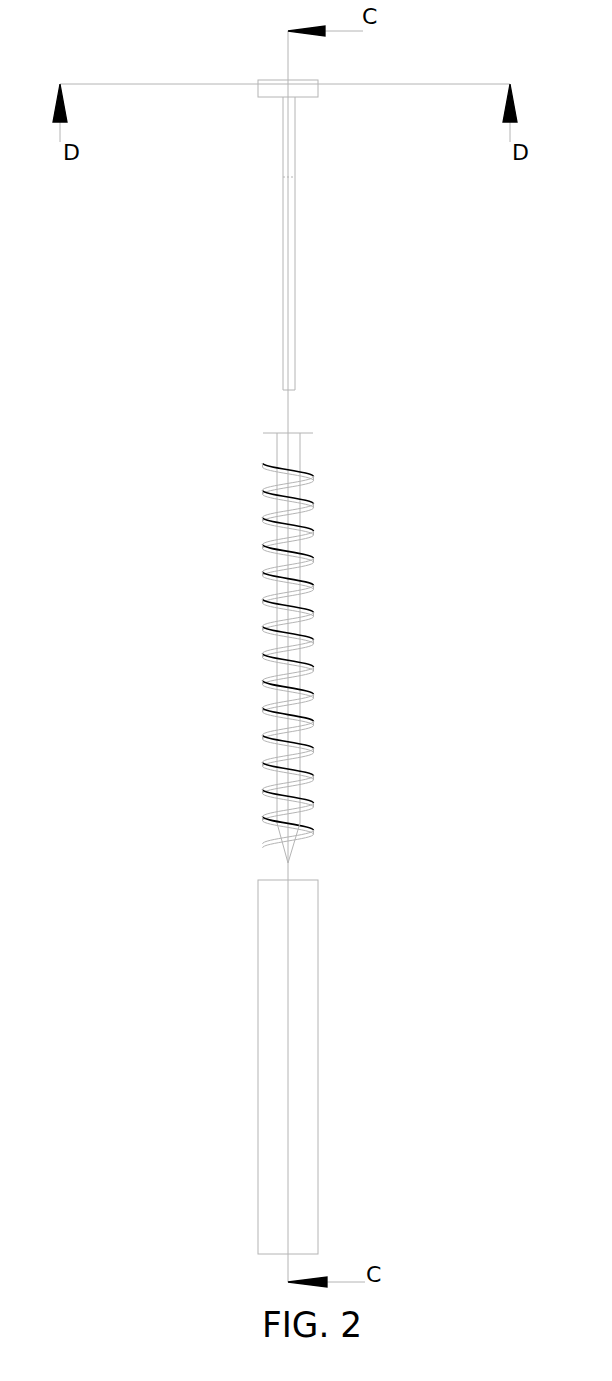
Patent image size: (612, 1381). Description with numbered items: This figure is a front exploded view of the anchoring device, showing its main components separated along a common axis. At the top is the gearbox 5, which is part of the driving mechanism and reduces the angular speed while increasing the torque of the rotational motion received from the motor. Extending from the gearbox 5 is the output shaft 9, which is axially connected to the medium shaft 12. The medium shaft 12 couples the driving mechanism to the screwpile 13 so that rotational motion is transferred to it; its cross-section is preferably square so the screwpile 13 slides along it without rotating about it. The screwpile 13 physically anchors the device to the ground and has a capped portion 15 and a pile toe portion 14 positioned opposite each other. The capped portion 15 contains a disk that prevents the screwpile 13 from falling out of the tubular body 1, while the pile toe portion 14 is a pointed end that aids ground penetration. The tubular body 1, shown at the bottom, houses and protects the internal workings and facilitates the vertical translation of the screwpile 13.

The tubular body 1 is at (312, 1063).
The gearbox 5 is at (270, 82).
The output shaft 9 is at (283, 138).
The medium shaft 12 is at (292, 253).
The screwpile 13 is at (76, 652).
The pile toe portion 14 is at (340, 820).
The capped portion 15 is at (243, 453).